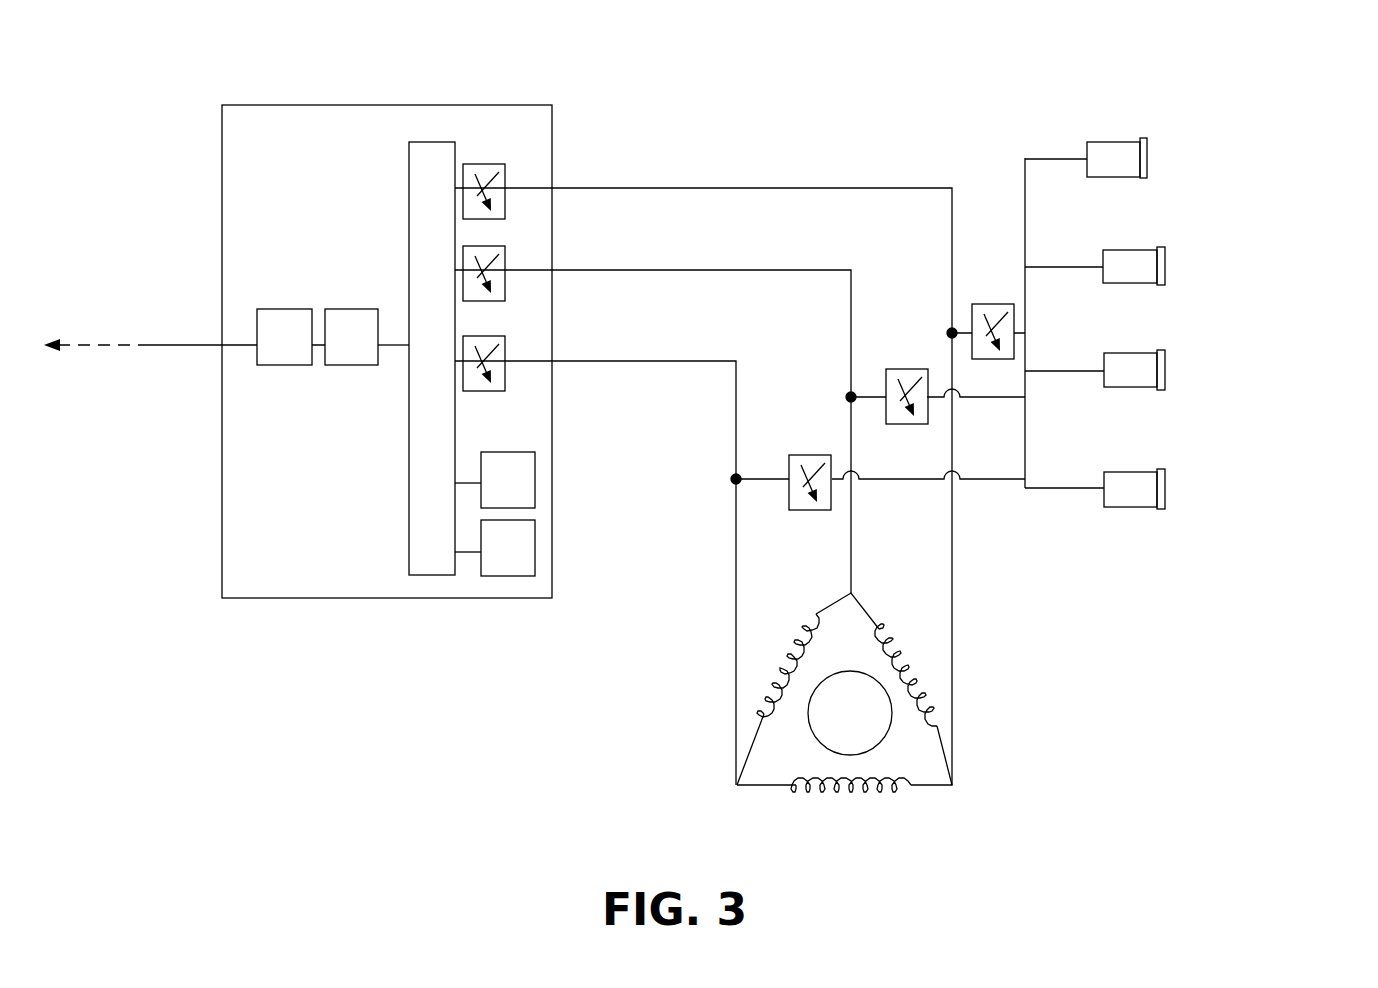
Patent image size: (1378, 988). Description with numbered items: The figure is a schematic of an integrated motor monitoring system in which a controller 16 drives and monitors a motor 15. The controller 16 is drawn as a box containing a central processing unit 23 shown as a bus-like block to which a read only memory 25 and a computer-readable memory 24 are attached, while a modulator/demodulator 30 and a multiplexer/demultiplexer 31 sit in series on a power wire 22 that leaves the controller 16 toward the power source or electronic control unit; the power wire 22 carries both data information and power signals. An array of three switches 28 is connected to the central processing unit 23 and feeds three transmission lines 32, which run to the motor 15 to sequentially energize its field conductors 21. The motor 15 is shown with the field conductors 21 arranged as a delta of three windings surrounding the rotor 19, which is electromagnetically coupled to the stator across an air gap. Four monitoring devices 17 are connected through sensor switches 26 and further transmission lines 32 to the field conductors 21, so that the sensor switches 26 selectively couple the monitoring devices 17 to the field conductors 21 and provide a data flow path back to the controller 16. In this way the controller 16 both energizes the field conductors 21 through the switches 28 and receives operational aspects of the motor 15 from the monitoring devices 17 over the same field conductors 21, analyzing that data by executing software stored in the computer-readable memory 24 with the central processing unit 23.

The motor 15 is at (919, 723).
The controller 16 is at (365, 105).
The monitoring devices 17 is at (1117, 178).
The rotor 19 is at (833, 729).
The field conductors 21 is at (795, 636).
The power wire 22 is at (143, 345).
The central processing unit 23 is at (432, 358).
The computer-readable memory 24 is at (495, 548).
The read only memory 25 is at (495, 480).
The sensor switches 26 is at (792, 455).
The switches 28 is at (475, 164).
The modulator/demodulator 30 is at (273, 337).
The multiplexer/demultiplexer 31 is at (367, 337).
The transmission lines 32 is at (745, 188).